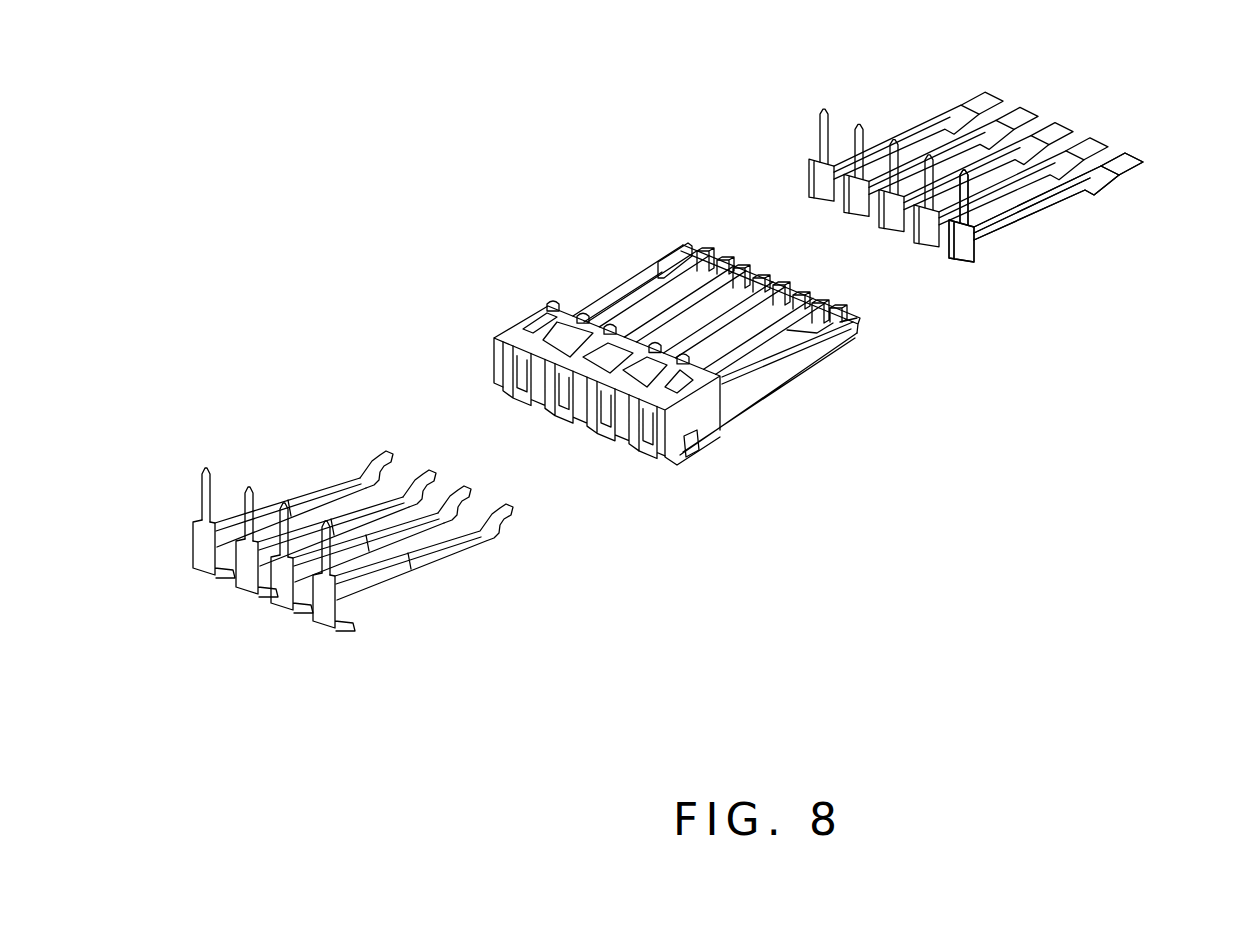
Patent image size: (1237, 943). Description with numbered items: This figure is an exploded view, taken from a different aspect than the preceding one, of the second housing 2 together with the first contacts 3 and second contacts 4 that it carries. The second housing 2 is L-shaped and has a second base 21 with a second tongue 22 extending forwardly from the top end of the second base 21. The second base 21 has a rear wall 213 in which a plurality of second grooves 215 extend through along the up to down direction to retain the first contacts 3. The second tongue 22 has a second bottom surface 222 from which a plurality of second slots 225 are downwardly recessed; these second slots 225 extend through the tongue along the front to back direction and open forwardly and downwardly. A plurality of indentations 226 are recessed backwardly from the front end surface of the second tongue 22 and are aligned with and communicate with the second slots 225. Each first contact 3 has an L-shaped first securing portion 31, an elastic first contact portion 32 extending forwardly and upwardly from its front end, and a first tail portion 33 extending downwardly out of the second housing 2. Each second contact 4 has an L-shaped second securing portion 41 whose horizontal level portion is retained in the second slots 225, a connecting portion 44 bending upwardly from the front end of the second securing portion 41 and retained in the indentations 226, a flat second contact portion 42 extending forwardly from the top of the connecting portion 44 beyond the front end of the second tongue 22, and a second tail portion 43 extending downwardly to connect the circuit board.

The second housing 2 is at (572, 272).
The second base 21 is at (692, 413).
The rear wall 213 is at (660, 433).
The second grooves 215 is at (645, 417).
The second tongue 22 is at (833, 348).
The second bottom surface 222 is at (747, 388).
The second slots 225 is at (775, 352).
The indentations 226 is at (848, 318).
The first contacts 3 is at (290, 467).
The first securing portion 31 is at (347, 612).
The first contact portion 32 is at (480, 538).
The first tail portion 33 is at (327, 540).
The second contacts 4 is at (858, 93).
The second securing portion 41 is at (978, 250).
The second contact portion 42 is at (1127, 167).
The second tail portion 43 is at (960, 198).
The connecting portion 44 is at (1118, 181).